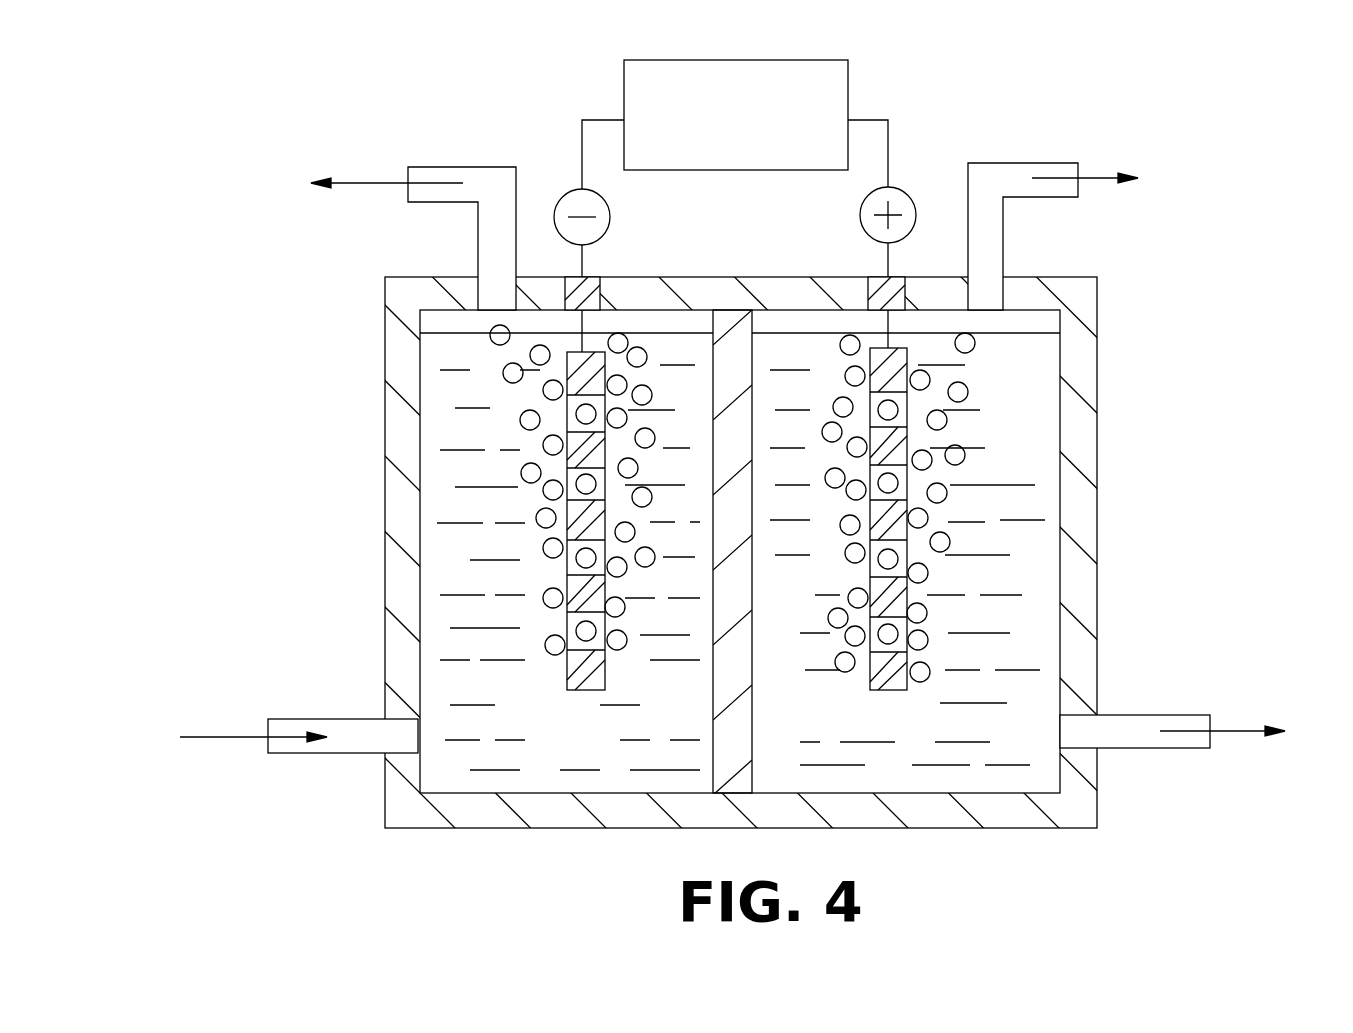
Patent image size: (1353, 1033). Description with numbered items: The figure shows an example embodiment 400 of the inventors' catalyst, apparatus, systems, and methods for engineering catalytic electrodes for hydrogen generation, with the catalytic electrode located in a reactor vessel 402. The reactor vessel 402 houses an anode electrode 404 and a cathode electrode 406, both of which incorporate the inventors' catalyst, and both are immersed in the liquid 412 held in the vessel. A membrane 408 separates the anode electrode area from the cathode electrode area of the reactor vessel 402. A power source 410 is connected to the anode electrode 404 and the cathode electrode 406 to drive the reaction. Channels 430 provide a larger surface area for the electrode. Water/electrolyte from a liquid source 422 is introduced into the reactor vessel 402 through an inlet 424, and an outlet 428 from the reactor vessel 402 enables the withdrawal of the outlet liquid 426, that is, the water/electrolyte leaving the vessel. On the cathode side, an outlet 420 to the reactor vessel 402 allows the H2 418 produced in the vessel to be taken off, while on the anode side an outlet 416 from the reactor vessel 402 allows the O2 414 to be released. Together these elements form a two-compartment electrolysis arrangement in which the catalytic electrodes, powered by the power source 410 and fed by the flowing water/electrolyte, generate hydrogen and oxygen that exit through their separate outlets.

The catalyst, apparatus, systems, and methods for engineering catalytic electrodes 400 is at (1014, 57).
The reactor vessel 402 is at (1100, 365).
The anode electrode 404 is at (870, 462).
The cathode electrode 406 is at (566, 563).
The membrane 408 is at (760, 722).
The power source 410 is at (772, 60).
The liquid 412 is at (670, 733).
The O2 414 is at (1095, 176).
The outlet 416 is at (1062, 200).
The H2 418 is at (356, 186).
The outlet 420 is at (447, 203).
The liquid source 422 is at (200, 737).
The inlet 424 is at (308, 719).
The outlet liquid 426 is at (1258, 725).
The outlet 428 is at (1162, 715).
The channels 430 is at (567, 405).